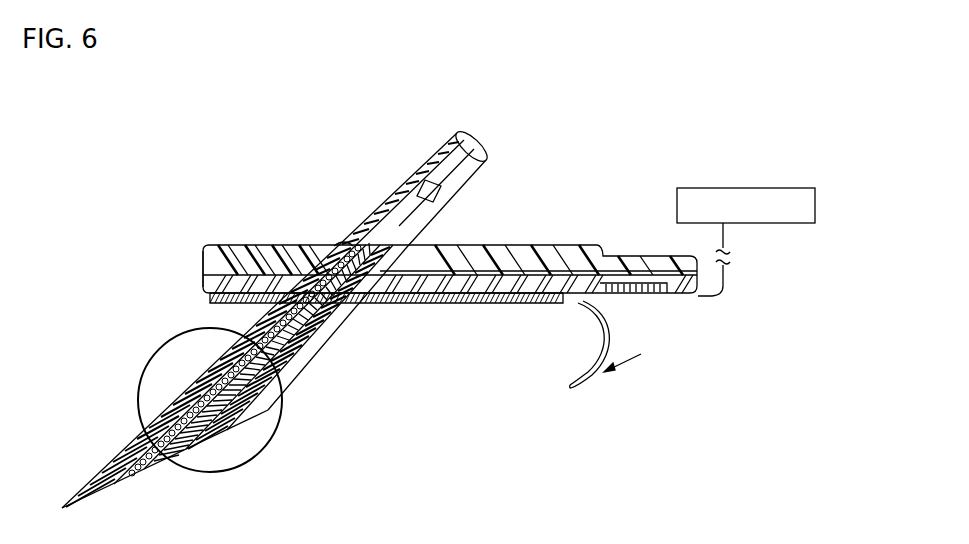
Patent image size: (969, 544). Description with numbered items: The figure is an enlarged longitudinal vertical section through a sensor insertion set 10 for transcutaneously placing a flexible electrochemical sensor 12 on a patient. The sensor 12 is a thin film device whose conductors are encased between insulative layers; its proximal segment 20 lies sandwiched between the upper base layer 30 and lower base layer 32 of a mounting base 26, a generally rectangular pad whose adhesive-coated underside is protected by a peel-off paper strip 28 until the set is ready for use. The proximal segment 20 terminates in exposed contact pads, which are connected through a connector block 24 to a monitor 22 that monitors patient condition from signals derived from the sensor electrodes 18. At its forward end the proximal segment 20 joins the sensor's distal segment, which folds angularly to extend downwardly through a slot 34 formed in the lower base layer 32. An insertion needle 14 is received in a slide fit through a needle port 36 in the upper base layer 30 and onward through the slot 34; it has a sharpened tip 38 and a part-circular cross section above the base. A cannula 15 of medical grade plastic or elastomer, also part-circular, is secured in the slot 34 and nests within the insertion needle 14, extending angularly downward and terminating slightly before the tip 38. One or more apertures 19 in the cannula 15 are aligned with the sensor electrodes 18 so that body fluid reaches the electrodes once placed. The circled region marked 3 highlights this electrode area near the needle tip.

The insertion set 10 is at (176, 163).
The enlarged detail region 3 is at (274, 432).
The flexible electrochemical sensor 12 is at (468, 257).
The insertion needle 14 is at (423, 160).
The cannula 15 is at (312, 246).
The sensor electrodes 18 is at (262, 398).
The apertures 19 is at (212, 432).
The proximal segment 20 is at (560, 258).
The monitor 22 is at (770, 188).
The connector block 24 is at (640, 298).
The mounting base 26 is at (252, 242).
The peel-off paper strip 28 is at (585, 318).
The upper base layer 30 is at (203, 262).
The lower base layer 32 is at (204, 285).
The slot 34 is at (345, 304).
The needle port 36 is at (345, 245).
The sharpened tip 38 is at (61, 507).